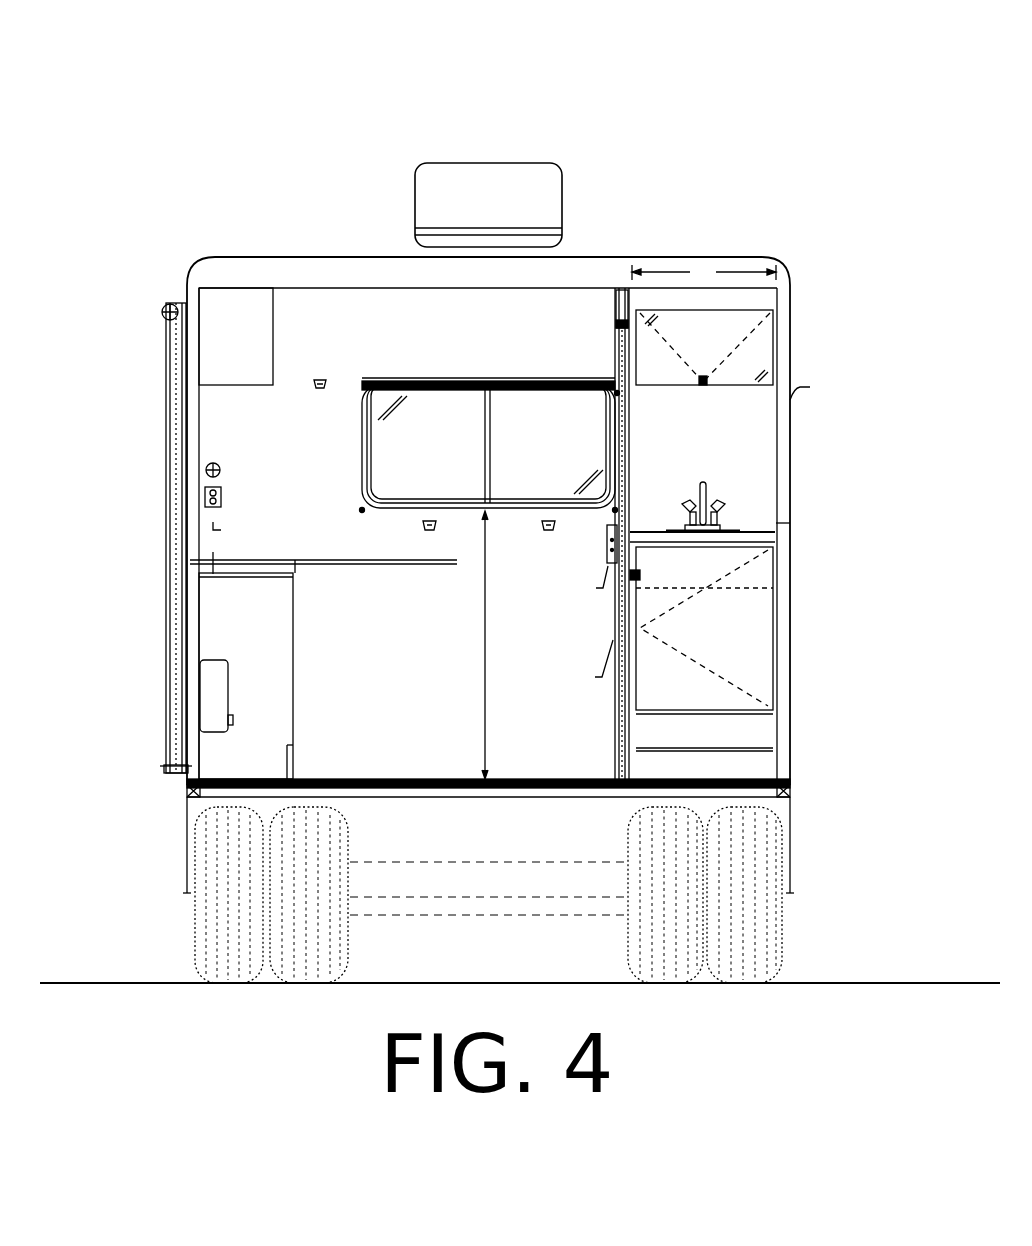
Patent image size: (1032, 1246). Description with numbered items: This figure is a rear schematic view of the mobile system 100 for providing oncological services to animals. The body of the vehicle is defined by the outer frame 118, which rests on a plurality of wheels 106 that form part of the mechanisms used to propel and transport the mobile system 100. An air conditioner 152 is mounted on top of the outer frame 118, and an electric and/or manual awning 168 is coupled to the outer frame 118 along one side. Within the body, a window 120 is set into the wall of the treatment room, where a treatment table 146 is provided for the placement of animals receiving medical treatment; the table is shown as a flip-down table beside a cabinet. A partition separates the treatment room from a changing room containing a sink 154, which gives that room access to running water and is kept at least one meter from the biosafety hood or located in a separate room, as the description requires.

The mobile system 100 is at (503, 58).
The wheels 106 is at (202, 942).
The outer frame 118 is at (182, 258).
The window 120 is at (552, 405).
The treatment table 146 is at (190, 563).
The air conditioner 152 is at (538, 170).
The sink 154 is at (732, 533).
The awning 168 is at (165, 383).